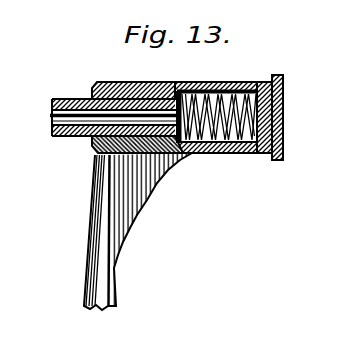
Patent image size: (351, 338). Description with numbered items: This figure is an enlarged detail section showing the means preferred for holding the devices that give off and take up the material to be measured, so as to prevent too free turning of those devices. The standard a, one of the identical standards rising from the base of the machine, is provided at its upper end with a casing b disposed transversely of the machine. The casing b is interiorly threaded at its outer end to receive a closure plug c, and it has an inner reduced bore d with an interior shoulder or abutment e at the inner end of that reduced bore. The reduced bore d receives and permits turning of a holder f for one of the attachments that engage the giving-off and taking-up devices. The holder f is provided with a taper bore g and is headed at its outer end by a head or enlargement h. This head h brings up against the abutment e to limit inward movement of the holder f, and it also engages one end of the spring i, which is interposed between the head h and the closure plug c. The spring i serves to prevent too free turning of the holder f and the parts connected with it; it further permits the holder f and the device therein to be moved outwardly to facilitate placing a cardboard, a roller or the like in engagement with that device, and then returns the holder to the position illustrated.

The standard a is at (127, 230).
The casing b is at (226, 152).
The closure plug c is at (283, 112).
The reduced bore d is at (134, 98).
The shoulder or abutment e is at (147, 157).
The holder f is at (70, 129).
The taper bore g is at (53, 119).
The head or enlargement h is at (190, 152).
The spring i is at (240, 84).